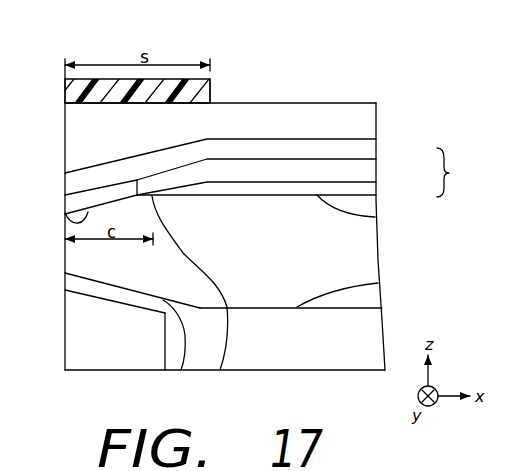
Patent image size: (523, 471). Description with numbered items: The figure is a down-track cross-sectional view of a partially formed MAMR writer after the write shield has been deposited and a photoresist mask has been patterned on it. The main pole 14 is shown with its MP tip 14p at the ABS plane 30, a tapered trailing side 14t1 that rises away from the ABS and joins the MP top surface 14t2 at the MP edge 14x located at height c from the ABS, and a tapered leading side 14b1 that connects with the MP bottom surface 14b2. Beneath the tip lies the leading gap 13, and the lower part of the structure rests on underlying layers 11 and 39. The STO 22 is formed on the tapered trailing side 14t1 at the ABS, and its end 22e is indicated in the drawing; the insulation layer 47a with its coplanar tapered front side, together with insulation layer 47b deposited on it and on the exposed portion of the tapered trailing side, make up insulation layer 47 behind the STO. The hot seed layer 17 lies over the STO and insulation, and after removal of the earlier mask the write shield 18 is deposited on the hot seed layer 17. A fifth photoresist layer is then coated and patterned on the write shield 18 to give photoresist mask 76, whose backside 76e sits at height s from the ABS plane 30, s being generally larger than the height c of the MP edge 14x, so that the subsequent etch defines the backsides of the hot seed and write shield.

The ABS plane 30 is at (65, 50).
The photoresist mask 76 is at (72, 93).
The backside of photoresist mask 76e is at (210, 99).
The write shield 18 is at (75, 127).
The hot seed layer 17 is at (367, 142).
The insulation layer 47b is at (367, 164).
The insulation layer 47a is at (367, 186).
The insulation layer 47 is at (455, 172).
The end of layer 22 22e is at (123, 183).
The STO device 22 is at (75, 204).
The MP tapered trailing side 14t1 is at (75, 222).
The MP tip 14p is at (65, 245).
The MP top surface 14t2 is at (375, 217).
The main pole 14 is at (342, 237).
The MP bottom surface 14b2 is at (378, 283).
The cladding layer 39 is at (368, 322).
The leading gap 13 is at (78, 282).
The substrate / base layer 11 is at (77, 327).
The MP leading side 14b1 is at (181, 370).
The MP edge 14x is at (220, 370).